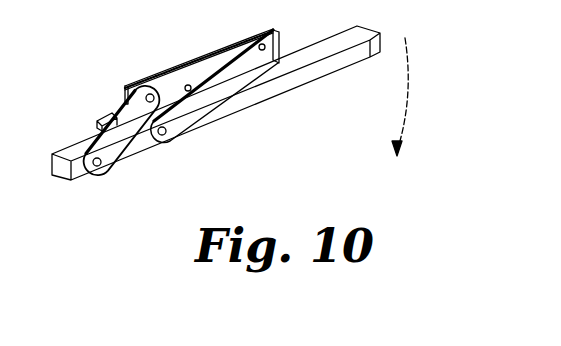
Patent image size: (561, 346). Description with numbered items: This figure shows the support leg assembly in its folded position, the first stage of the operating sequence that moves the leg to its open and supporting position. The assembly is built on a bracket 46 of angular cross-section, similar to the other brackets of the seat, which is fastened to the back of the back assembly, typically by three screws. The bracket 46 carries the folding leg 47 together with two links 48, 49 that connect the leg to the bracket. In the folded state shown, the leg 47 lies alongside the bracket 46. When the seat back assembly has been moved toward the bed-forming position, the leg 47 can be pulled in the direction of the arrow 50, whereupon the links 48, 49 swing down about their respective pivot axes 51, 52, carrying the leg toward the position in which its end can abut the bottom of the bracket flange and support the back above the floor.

The bracket 46 is at (184, 74).
The folding leg 47 is at (318, 68).
The link 48 is at (219, 84).
The link 49 is at (117, 142).
The arrow 50 is at (412, 90).
The pivot axis 51 is at (276, 30).
The pivot axis 52 is at (147, 82).